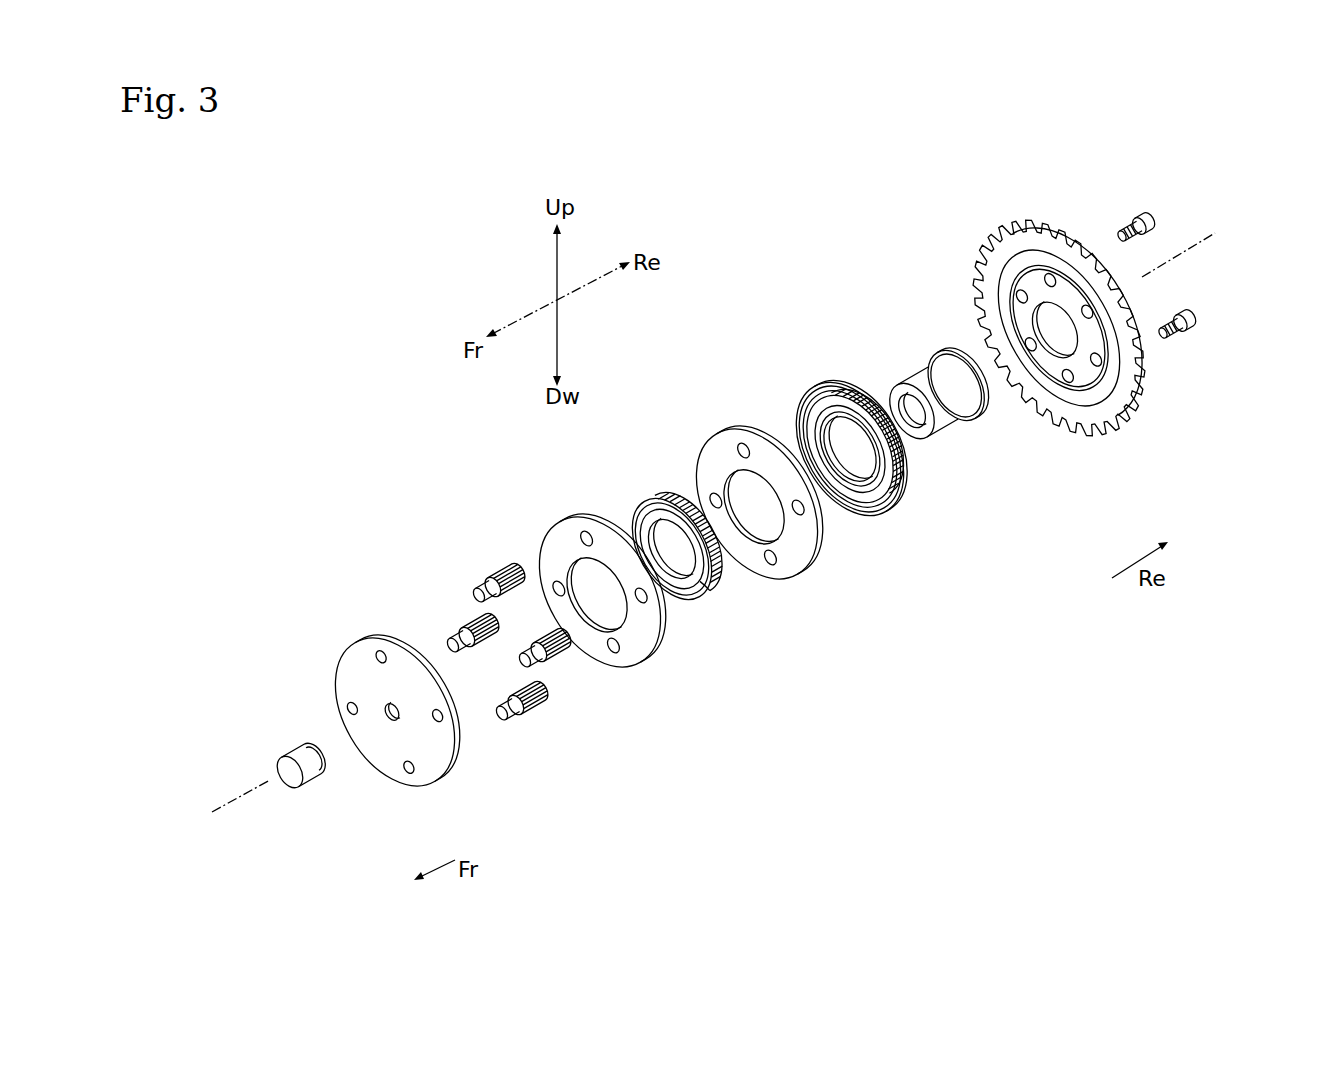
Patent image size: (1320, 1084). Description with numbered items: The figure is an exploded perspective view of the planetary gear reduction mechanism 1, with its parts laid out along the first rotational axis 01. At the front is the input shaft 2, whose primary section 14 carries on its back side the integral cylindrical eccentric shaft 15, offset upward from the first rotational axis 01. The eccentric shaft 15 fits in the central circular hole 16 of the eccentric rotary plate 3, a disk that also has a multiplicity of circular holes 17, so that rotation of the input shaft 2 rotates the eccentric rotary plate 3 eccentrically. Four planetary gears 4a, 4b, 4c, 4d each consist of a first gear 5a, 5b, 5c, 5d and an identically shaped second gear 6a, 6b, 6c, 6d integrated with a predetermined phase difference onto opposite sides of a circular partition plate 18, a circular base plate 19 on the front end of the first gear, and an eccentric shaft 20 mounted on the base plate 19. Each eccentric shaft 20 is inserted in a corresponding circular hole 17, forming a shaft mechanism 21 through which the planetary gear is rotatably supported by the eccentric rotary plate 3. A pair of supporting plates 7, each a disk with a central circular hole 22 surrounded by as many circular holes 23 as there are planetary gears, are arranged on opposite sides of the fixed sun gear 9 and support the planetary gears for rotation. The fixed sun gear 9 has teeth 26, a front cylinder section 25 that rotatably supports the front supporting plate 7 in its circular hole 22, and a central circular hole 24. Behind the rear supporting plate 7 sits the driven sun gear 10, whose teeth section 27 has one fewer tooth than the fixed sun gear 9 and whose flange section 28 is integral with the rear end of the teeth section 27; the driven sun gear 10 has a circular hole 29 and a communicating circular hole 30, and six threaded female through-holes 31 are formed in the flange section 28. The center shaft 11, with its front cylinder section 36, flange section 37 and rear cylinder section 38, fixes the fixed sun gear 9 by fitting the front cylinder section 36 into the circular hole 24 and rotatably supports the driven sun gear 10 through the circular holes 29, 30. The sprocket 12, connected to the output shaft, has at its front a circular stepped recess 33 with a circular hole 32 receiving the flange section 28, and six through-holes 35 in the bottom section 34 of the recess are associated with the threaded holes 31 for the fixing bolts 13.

The planetary gear reduction mechanism 1 is at (358, 241).
The first rotational axis 01 is at (240, 795).
The input shaft 2 is at (290, 722).
The primary section 14 is at (285, 758).
The eccentric shaft 15 is at (312, 748).
The eccentric rotary plate 3 is at (401, 726).
The central circular hole 16 is at (390, 717).
The circular holes 17 is at (352, 703).
The planetary gear 4a is at (498, 545).
The planetary gear 4b is at (571, 565).
The planetary gear 4c is at (532, 713).
The planetary gear 4d is at (443, 602).
The first gear 5a is at (482, 585).
The first gear 5b is at (535, 653).
The first gear 5c is at (502, 708).
The first gear 5d is at (455, 640).
The second gear 6a is at (500, 575).
The second gear 6b is at (564, 654).
The second gear 6c is at (550, 720).
The second gear 6d is at (478, 628).
The circular partition plate 18 is at (516, 660).
The circular base plate 19 is at (547, 692).
The eccentric shaft 20 is at (517, 648).
The shaft mechanism 21 is at (378, 582).
The supporting plates 7 is at (688, 536).
The circular hole 22 is at (600, 553).
The circular holes 23 is at (587, 538).
The fixed sun gear 9 is at (693, 551).
The circular hole 24 is at (655, 518).
The front cylinder section 25 is at (672, 503).
The teeth 26 is at (700, 600).
The driven sun gear 10 is at (879, 449).
The teeth section 27 is at (882, 455).
The flange section 28 is at (890, 445).
The circular hole 29 is at (862, 468).
The circular hole 30 is at (846, 432).
The threaded female through-holes 31 is at (838, 395).
The center shaft 11 is at (946, 388).
The front cylinder section 36 is at (920, 385).
The flange section 37 is at (945, 362).
The rear cylinder section 38 is at (962, 358).
The sprocket 12 is at (1059, 338).
The circular hole 32 is at (1055, 300).
The circular stepped recess 33 is at (1022, 290).
The bottom section 34 is at (1025, 392).
The through-holes 35 is at (1010, 252).
The fixing bolts 13 is at (1152, 222).